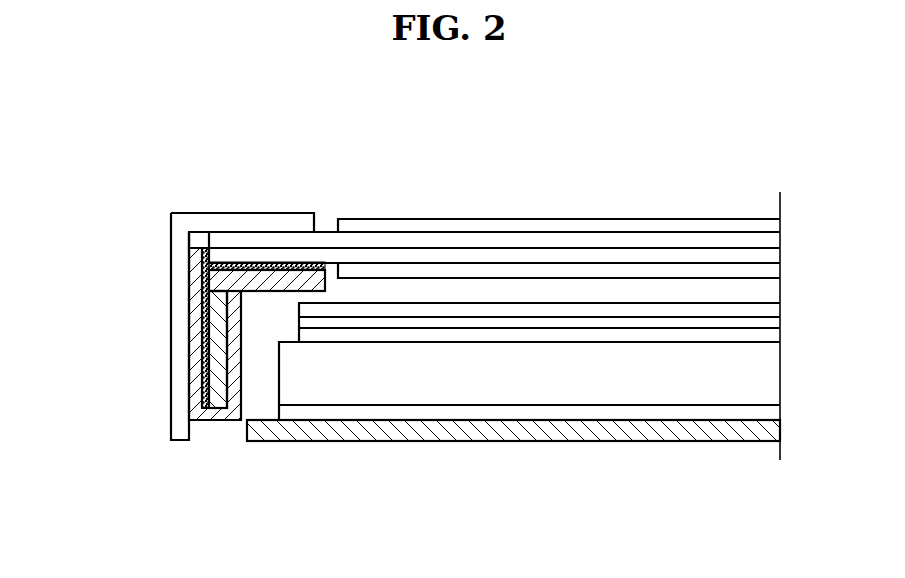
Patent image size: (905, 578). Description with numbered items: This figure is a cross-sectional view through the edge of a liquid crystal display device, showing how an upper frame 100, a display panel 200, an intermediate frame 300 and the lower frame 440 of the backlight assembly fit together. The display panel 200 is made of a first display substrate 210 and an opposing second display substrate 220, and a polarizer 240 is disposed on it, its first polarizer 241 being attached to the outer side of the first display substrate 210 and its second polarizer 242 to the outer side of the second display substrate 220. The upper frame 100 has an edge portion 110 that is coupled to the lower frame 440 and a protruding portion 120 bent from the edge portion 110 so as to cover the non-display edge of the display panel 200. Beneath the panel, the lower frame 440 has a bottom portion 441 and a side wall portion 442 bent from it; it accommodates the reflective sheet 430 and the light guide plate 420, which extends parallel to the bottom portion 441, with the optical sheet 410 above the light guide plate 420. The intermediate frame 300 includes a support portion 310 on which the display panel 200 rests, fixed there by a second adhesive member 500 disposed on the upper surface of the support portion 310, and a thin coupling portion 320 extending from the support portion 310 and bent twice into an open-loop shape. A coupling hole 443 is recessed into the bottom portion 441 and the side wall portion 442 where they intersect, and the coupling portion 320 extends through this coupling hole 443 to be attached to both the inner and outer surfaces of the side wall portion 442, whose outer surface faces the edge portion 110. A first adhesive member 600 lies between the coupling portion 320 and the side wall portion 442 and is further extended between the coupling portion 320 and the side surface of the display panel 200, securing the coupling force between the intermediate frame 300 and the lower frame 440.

The upper frame 100 is at (95, 195).
The edge portion 110 is at (182, 245).
The protruding portion 120 is at (217, 221).
The display panel 200 is at (418, 150).
The first display substrate 210 is at (495, 258).
The second display substrate 220 is at (417, 240).
The polarizer 240 is at (600, 150).
The first polarizer 241 is at (677, 272).
The second polarizer 242 is at (600, 228).
The intermediate frame 300 is at (118, 312).
The support portion 310 is at (282, 286).
The coupling portion 320 is at (195, 374).
The optical sheet 410 is at (787, 303).
The light guide plate 420 is at (765, 373).
The reflective sheet 430 is at (765, 414).
The lower frame 440 is at (307, 500).
The bottom portion 441 is at (303, 430).
The side wall portion 442 is at (219, 384).
The coupling hole 443 is at (238, 432).
The second adhesive member 500 is at (243, 267).
The first adhesive member 600 is at (200, 265).